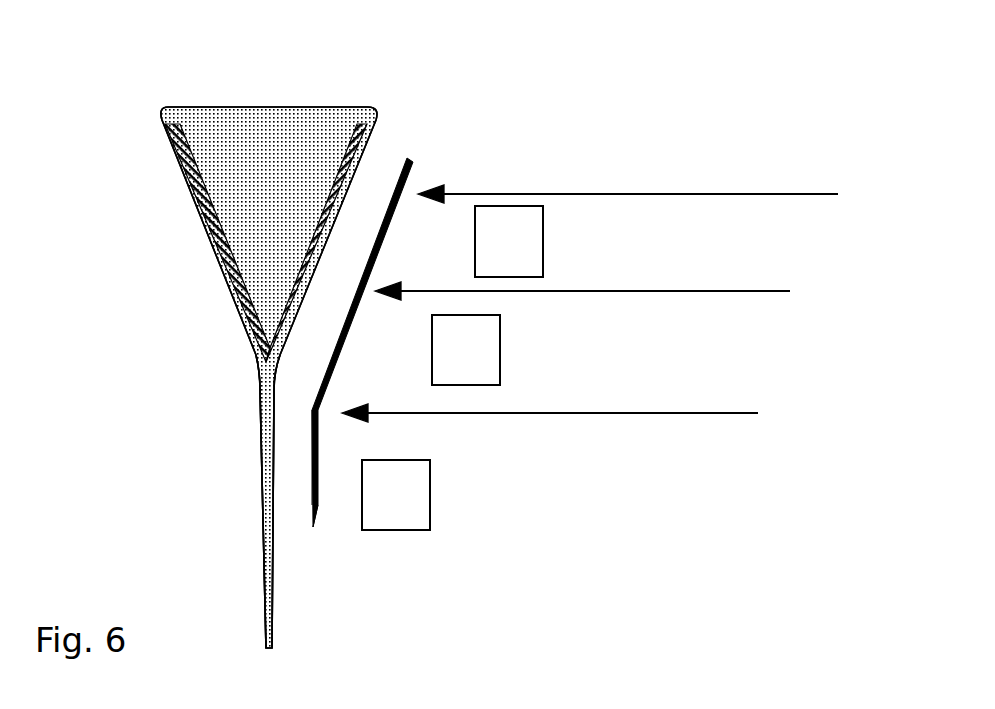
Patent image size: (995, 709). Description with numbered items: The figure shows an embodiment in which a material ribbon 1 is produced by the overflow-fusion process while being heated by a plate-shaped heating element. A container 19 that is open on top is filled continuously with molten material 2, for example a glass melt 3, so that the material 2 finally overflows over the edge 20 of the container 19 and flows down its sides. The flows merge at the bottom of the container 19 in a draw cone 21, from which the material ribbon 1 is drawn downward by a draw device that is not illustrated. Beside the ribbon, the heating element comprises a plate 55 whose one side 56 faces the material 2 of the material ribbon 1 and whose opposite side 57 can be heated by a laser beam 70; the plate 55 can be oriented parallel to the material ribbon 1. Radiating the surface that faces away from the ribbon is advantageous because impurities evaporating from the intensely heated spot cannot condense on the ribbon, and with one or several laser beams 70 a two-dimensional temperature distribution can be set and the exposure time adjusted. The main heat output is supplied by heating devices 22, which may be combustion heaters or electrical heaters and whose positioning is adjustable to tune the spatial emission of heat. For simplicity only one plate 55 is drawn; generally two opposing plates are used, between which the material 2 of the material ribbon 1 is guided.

The material ribbon 1 is at (262, 470).
The molten material 2 is at (235, 118).
The glass melt 3 is at (235, 118).
The container 19 is at (160, 116).
The edge 20 is at (345, 118).
The draw cone 21 is at (264, 372).
The heating devices 22 is at (522, 277).
The plate 55 is at (410, 160).
The one side of plate 56 is at (312, 467).
The opposite side of plate 57 is at (317, 505).
The laser beam 70 is at (733, 194).